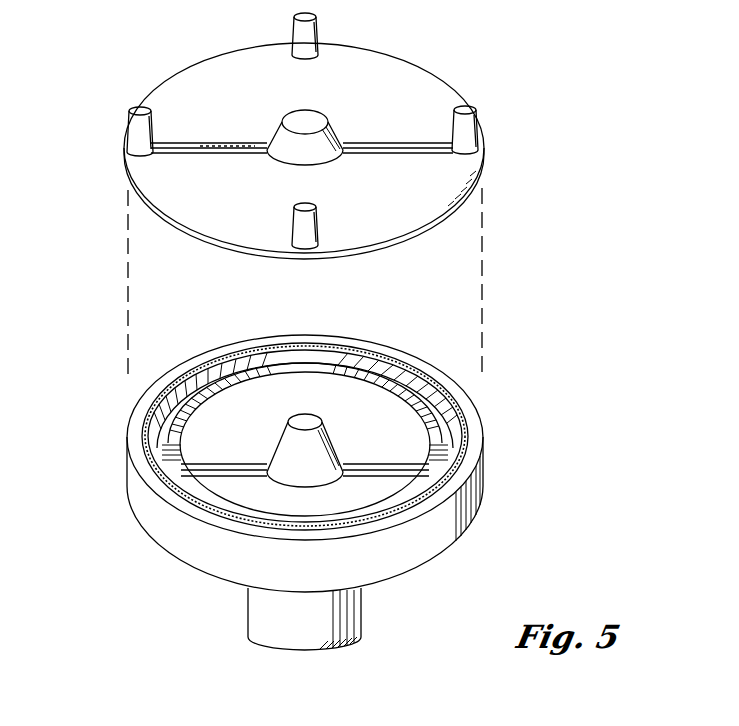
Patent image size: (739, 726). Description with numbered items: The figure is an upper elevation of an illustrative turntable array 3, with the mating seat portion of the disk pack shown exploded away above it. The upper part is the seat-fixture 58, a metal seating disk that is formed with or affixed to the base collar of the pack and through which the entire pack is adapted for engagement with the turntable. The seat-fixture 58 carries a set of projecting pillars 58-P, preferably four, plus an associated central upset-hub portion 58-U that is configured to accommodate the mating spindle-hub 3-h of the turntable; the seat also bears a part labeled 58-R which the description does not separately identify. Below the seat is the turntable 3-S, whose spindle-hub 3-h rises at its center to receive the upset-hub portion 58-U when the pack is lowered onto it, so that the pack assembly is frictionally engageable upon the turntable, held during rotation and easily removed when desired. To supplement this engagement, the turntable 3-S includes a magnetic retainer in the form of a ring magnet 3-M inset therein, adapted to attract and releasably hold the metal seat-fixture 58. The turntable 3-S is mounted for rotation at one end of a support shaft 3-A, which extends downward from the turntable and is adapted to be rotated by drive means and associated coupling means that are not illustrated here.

The seat-fixture 58 is at (350, 150).
The central upset-hub portion 58-U is at (327, 113).
The rim of cover plate 58-R is at (484, 174).
The projecting pillars 58-P is at (293, 222).
The turntable array 3 is at (298, 492).
The ring magnet 3-M is at (150, 438).
The spindle-hub 3-h is at (329, 437).
The turntable 3-S is at (485, 500).
The support shaft 3-A is at (362, 627).